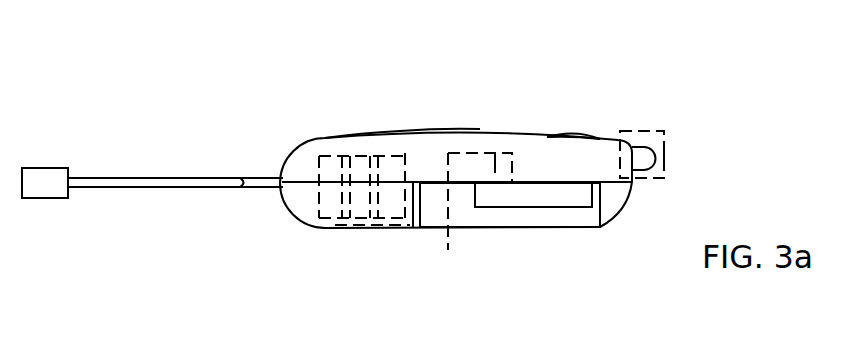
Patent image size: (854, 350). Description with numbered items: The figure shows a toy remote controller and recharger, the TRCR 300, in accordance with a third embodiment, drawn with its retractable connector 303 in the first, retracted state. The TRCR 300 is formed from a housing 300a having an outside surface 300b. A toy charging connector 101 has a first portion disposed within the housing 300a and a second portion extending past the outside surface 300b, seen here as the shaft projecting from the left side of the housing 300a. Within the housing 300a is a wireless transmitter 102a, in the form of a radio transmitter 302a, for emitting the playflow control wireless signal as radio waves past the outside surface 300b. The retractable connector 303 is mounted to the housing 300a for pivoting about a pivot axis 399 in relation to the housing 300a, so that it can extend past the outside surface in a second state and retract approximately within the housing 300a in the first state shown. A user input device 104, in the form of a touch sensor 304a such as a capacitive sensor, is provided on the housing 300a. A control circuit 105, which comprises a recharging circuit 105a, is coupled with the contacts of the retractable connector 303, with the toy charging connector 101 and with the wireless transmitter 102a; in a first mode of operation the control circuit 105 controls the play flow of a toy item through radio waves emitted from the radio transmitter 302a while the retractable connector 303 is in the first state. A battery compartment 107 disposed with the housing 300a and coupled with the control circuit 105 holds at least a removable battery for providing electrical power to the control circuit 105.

The TRCR 300 is at (289, 109).
The housing 300a is at (377, 135).
The outside surface 300b is at (408, 133).
The toy charging connector 101 is at (88, 183).
The wireless transmitter 102a is at (665, 153).
The user input device 104 is at (553, 137).
The control circuit 105 is at (488, 165).
The recharging circuit 105a is at (510, 160).
The battery compartment 107 is at (337, 230).
The radio transmitter 302a is at (650, 157).
The retractable connector 303 is at (522, 223).
The touch sensor 304a is at (580, 137).
The pivot axis 399 is at (448, 250).